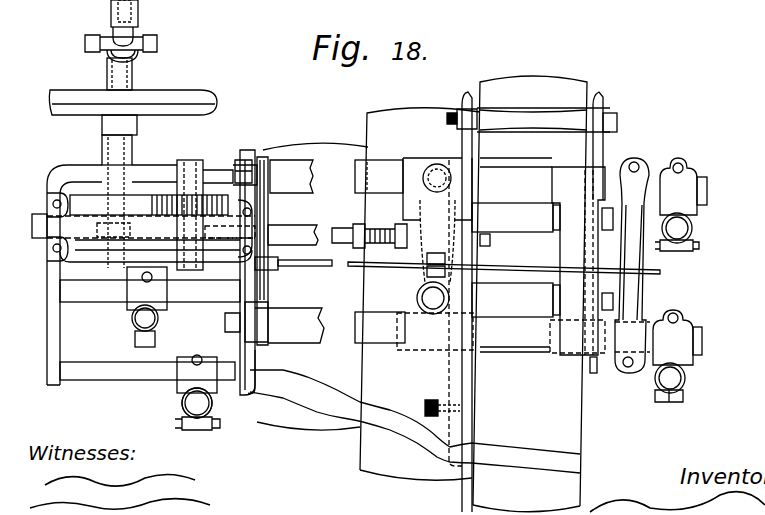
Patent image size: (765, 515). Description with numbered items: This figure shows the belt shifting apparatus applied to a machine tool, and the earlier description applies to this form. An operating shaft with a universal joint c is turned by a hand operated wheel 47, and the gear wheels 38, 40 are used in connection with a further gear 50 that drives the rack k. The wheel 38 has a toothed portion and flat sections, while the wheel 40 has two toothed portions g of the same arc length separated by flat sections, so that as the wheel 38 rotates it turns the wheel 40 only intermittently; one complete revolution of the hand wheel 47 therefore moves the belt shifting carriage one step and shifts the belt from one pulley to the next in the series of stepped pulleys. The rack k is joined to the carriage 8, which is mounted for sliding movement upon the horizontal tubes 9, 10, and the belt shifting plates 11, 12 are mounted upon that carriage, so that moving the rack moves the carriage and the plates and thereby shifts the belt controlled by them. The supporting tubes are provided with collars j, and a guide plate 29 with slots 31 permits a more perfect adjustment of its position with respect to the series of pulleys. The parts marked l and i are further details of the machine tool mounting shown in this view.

The universal joint c is at (150, 40).
The hand operated wheel 47 is at (165, 97).
The gear wheel 38 is at (135, 205).
The gear wheel 40 is at (210, 185).
The shaft 50 is at (220, 238).
The roller i is at (205, 403).
The horizontal tube 10 is at (285, 165).
The belt shifting plate 12 is at (460, 100).
The bar 11 is at (598, 103).
The plate l is at (596, 375).
The bracket 8 is at (453, 193).
The guide plate 29 is at (516, 237).
The rack k is at (335, 230).
The slots 31 is at (275, 268).
The horizontal tube 9 is at (305, 320).
The toothed portions g is at (687, 185).
The collars j is at (655, 378).